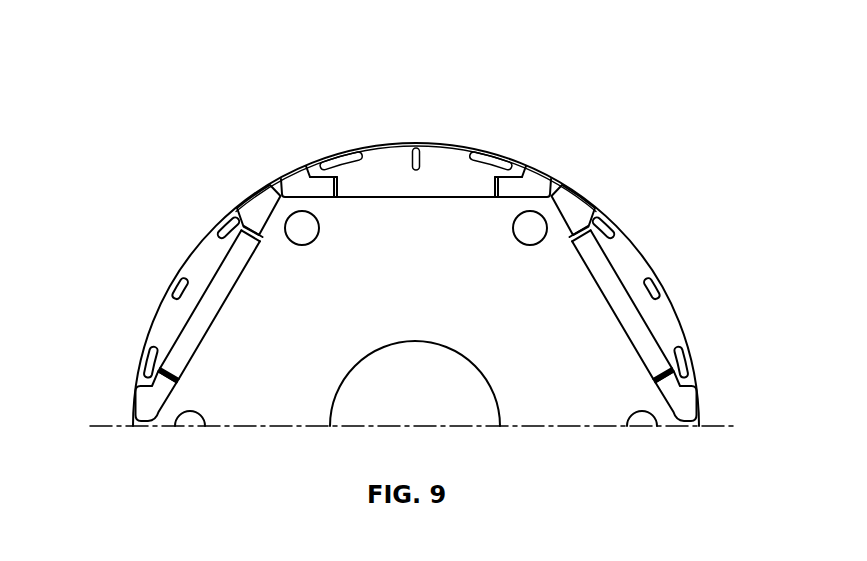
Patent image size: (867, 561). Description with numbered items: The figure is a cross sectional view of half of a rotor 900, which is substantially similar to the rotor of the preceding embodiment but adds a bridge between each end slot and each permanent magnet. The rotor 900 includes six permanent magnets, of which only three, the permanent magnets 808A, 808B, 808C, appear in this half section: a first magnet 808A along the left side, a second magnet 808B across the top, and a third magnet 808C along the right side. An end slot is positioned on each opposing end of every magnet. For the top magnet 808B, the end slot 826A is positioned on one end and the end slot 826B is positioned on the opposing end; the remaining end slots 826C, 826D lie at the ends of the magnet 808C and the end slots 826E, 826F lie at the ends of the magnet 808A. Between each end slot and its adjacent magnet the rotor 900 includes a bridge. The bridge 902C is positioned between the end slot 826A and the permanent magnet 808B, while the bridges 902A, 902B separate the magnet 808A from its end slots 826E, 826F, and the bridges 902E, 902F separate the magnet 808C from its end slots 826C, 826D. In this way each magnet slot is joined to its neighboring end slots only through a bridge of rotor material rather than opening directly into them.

The rotor 900 is at (246, 72).
The permanent magnet 808A is at (208, 302).
The permanent magnet 808B is at (433, 190).
The permanent magnet 808C is at (618, 312).
The end slot 826A is at (300, 177).
The end slot 826B is at (530, 176).
The end slot 826C is at (573, 205).
The end slot 826D is at (683, 402).
The end slot 826E is at (145, 402).
The end slot 826F is at (258, 208).
The bridge 902A is at (176, 378).
The bridge 902B is at (255, 237).
The bridge 902C is at (337, 190).
The bridge 902E is at (571, 242).
The bridge 902F is at (652, 374).